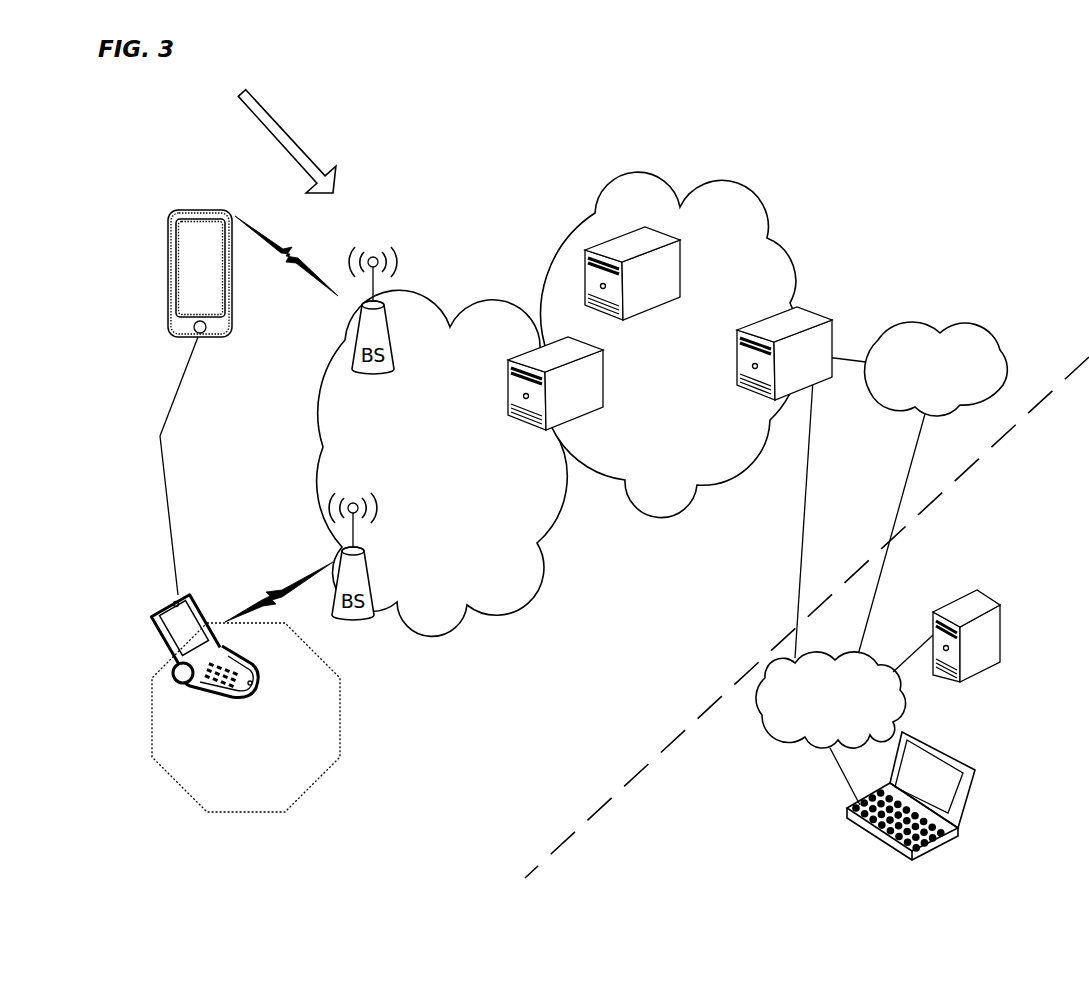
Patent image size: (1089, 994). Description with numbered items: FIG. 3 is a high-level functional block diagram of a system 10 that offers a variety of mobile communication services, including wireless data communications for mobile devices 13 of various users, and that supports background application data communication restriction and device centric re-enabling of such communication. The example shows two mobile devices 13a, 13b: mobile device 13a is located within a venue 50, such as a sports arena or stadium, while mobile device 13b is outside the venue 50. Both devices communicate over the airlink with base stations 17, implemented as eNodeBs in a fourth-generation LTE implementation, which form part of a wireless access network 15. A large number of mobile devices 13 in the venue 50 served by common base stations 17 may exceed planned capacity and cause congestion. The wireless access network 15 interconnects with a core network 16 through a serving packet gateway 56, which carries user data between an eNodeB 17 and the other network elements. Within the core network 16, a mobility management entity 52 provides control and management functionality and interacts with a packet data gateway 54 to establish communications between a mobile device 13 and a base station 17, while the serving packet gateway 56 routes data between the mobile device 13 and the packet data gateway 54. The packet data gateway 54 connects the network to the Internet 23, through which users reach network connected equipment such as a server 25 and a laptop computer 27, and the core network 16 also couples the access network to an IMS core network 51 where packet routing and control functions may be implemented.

The mobile communication network 10 is at (279, 132).
The mobile devices 13 is at (160, 436).
The mobile device 13a is at (150, 626).
The mobile device 13b is at (168, 256).
The wireless access network 15 is at (465, 305).
The core network 16 is at (592, 215).
The base station 17 is at (353, 325).
The Internet 23 is at (770, 750).
The server 25 is at (932, 611).
The laptop computer 27 is at (870, 848).
The venue 50 is at (343, 740).
The IMS core network 51 is at (1006, 380).
The mobility management entity 52 is at (688, 278).
The packet data gateway 54 is at (830, 331).
The serving packet gateway 56 is at (598, 402).